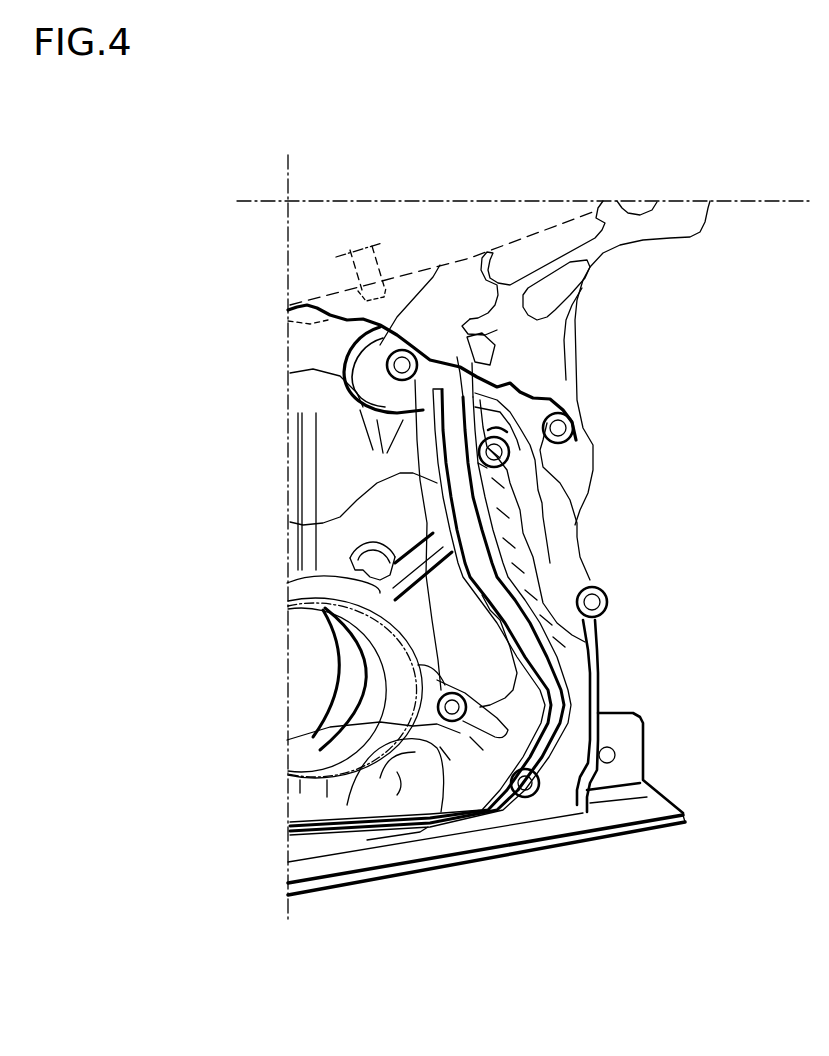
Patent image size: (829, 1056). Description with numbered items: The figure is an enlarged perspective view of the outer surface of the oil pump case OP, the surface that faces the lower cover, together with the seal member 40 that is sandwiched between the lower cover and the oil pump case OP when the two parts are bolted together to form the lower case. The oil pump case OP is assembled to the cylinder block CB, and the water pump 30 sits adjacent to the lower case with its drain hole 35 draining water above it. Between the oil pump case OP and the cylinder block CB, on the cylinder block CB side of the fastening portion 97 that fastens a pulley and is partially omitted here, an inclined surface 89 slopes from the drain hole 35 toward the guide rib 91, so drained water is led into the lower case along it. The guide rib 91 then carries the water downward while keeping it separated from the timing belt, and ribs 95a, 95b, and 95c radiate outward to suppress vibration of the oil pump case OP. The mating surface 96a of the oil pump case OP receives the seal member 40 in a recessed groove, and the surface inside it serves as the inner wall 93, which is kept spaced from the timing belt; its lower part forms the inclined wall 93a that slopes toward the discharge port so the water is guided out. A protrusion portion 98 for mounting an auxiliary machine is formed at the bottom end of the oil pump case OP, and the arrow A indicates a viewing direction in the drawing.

The water pump 30 is at (290, 322).
The drain hole 35 is at (393, 337).
The inclined surface 89 is at (440, 265).
The fastening portion 97 is at (375, 408).
The guide rib 91 is at (307, 526).
The rib 95a is at (290, 741).
The rib 95b is at (325, 632).
The rib 95c is at (292, 550).
The protrusion portion 98 is at (387, 807).
The inner wall 93 is at (517, 633).
The inclined wall 93a is at (528, 717).
The mating surface 96a is at (523, 653).
The seal member 40 is at (603, 690).
The oil pump case OP is at (537, 512).
The cylinder block CB is at (585, 446).
The direction A is at (510, 362).